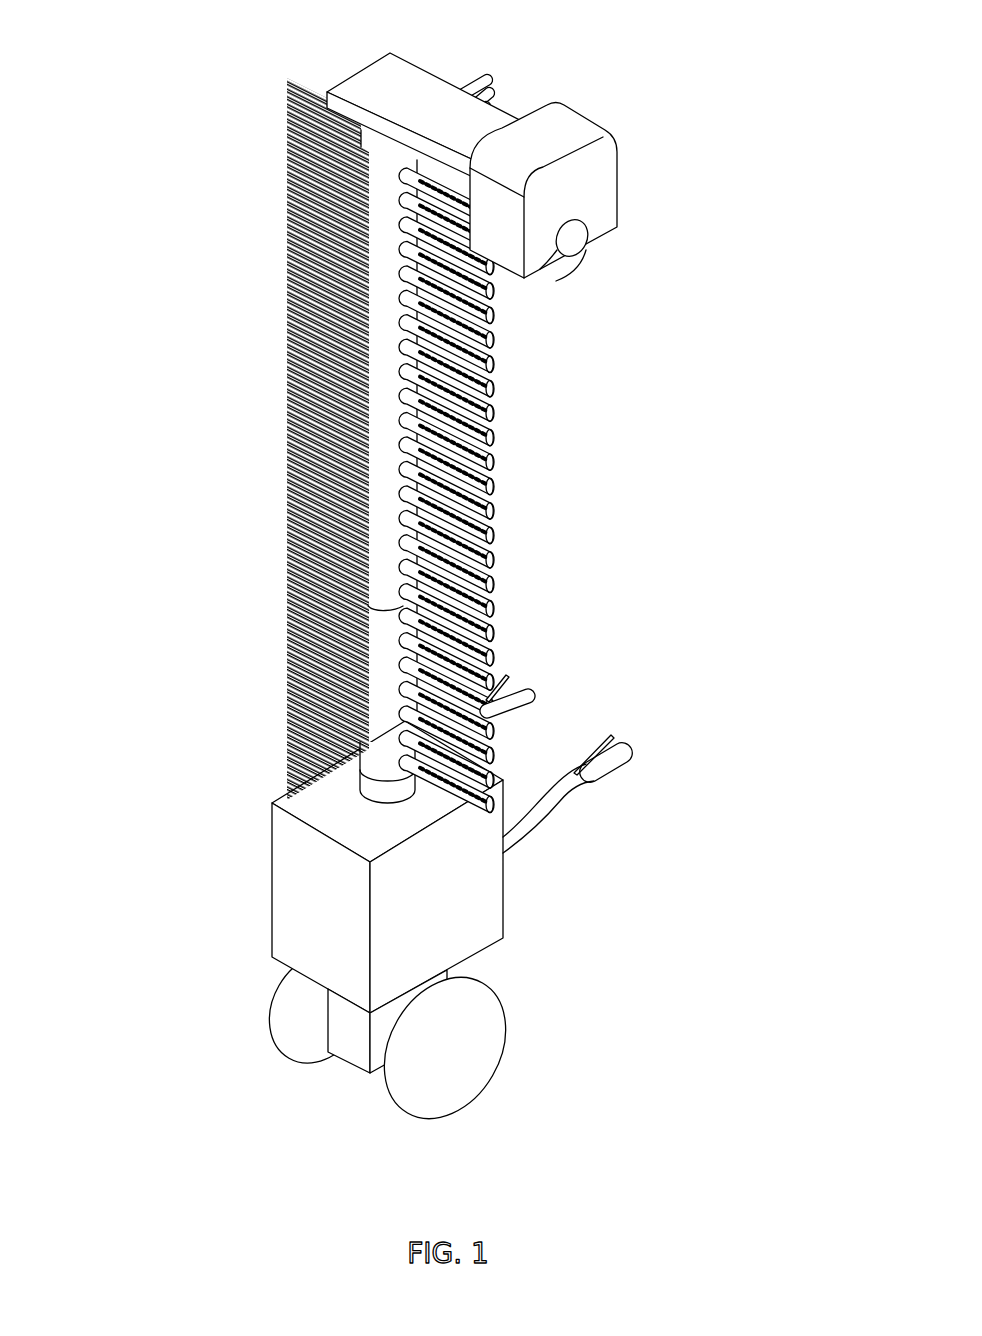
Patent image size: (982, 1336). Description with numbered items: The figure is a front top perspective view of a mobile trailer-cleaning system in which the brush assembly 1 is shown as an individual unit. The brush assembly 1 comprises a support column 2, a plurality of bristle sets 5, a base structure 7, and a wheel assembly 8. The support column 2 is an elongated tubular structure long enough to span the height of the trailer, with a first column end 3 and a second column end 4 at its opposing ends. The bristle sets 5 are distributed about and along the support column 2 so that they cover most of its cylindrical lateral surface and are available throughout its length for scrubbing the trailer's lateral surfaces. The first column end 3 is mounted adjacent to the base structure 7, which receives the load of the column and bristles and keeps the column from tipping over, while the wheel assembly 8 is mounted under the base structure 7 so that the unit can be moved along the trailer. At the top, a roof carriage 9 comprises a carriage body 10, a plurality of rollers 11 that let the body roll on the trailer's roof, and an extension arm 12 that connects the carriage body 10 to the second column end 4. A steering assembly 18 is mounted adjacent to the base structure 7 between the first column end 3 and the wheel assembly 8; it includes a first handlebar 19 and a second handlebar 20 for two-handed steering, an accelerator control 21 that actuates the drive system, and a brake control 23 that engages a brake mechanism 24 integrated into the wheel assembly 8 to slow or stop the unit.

The brush assembly 1 is at (433, 572).
The support column 2 is at (407, 795).
The first column end 3 is at (381, 798).
The second column end 4 is at (379, 151).
The plurality of bristle sets 5 is at (290, 80).
The base structure 7 is at (497, 903).
The wheel assembly 8 is at (483, 1052).
The roof carriage 9 is at (548, 166).
The carriage body 10 is at (612, 168).
The plurality of rollers 11 is at (563, 265).
The extension arm 12 is at (405, 72).
The steering assembly 18 is at (630, 756).
The first handlebar 19 is at (548, 808).
The second handlebar 20 is at (508, 708).
The accelerator control 21 is at (510, 680).
The brake control 23 is at (613, 737).
The brake mechanism 24 is at (327, 995).